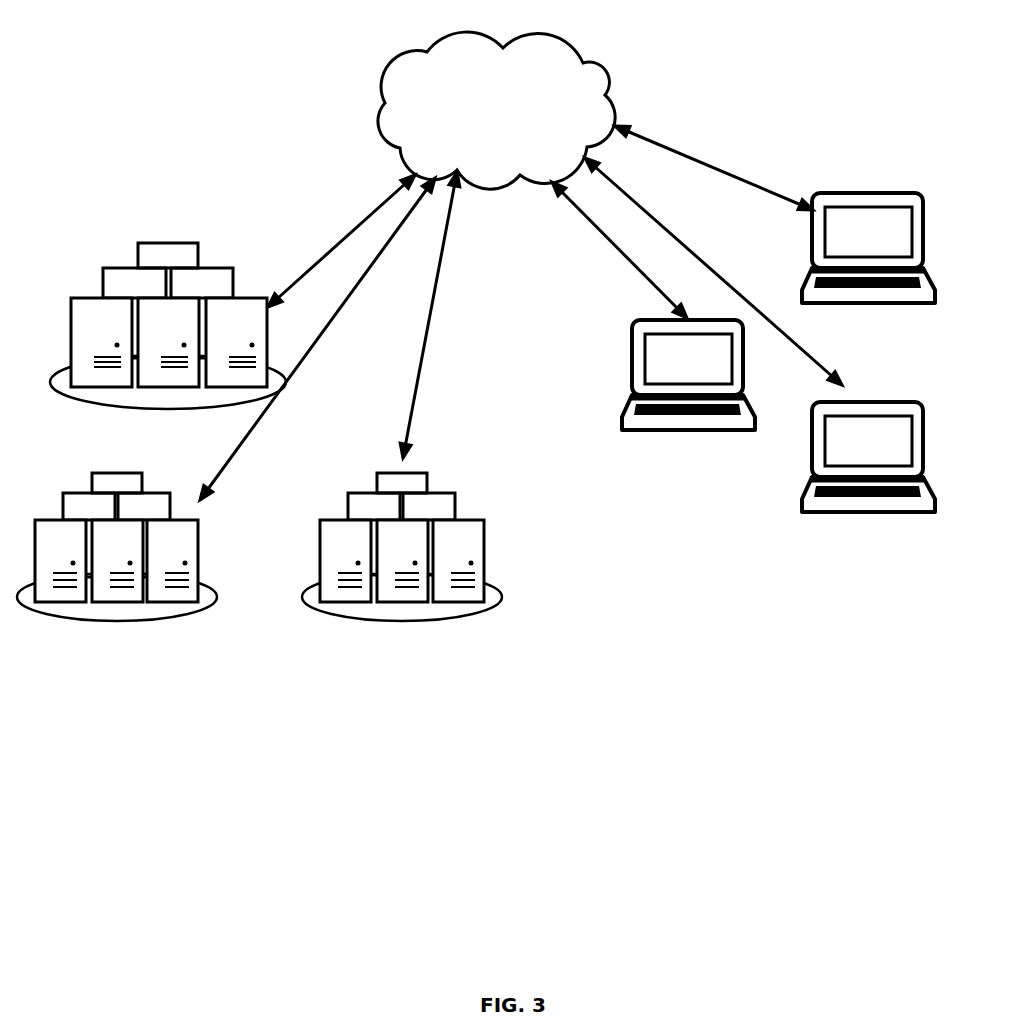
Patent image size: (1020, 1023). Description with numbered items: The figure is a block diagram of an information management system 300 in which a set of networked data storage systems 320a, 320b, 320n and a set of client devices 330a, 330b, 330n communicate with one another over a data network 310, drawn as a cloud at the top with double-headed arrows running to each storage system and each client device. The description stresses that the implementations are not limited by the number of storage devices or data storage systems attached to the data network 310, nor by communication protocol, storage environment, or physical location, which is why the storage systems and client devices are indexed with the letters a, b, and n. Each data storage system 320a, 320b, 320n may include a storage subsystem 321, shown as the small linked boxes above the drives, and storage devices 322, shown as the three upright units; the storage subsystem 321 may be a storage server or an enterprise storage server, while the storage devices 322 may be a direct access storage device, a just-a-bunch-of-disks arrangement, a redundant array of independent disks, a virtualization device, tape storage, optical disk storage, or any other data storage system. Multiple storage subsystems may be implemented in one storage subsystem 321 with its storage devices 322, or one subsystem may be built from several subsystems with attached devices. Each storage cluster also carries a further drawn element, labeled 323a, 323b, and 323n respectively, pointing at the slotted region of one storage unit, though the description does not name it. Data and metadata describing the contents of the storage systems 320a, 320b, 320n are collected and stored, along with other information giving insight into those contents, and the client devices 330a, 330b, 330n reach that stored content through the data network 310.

The information management system 300 is at (312, 97).
The data network 310 is at (496, 110).
The data storage system 320a is at (183, 340).
The data storage system 320b is at (138, 562).
The data storage system 320n is at (425, 562).
The storage subsystem 321 is at (168, 270).
The storage devices 322 is at (169, 342).
The data store 323a is at (246, 367).
The data store 323b is at (182, 587).
The data store 323n is at (467, 587).
The client device 330a is at (688, 396).
The client device 330b is at (868, 269).
The client device 330n is at (868, 477).